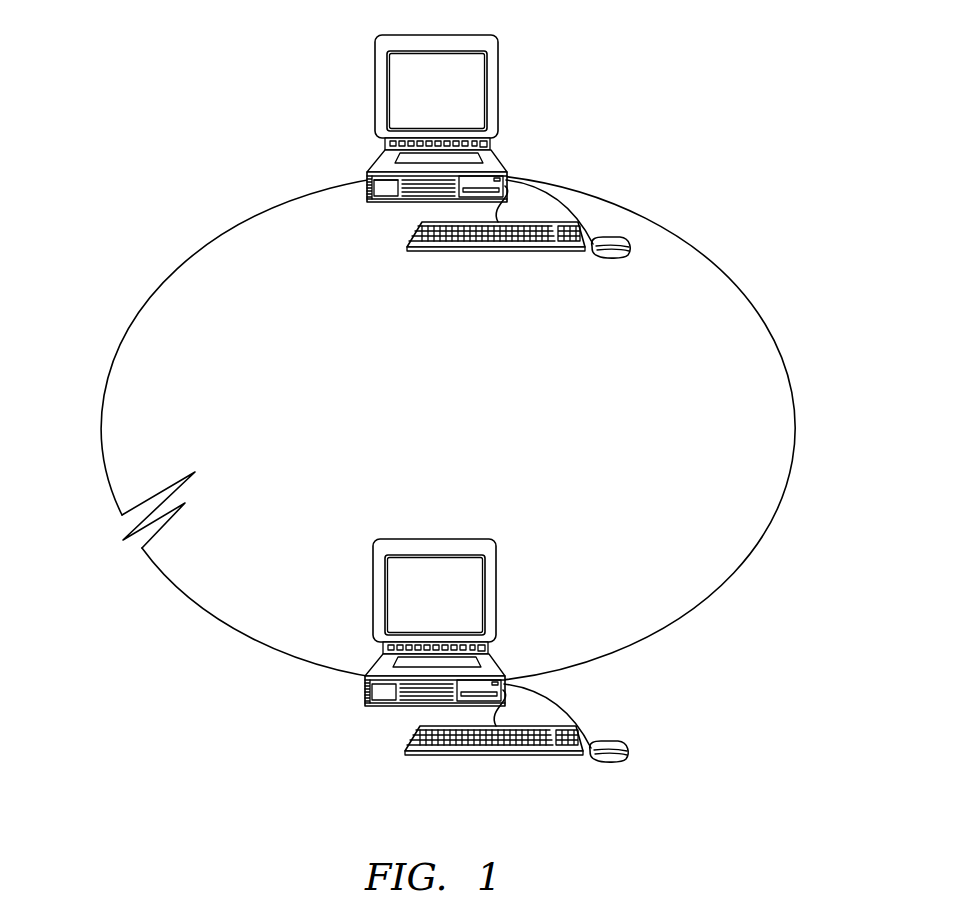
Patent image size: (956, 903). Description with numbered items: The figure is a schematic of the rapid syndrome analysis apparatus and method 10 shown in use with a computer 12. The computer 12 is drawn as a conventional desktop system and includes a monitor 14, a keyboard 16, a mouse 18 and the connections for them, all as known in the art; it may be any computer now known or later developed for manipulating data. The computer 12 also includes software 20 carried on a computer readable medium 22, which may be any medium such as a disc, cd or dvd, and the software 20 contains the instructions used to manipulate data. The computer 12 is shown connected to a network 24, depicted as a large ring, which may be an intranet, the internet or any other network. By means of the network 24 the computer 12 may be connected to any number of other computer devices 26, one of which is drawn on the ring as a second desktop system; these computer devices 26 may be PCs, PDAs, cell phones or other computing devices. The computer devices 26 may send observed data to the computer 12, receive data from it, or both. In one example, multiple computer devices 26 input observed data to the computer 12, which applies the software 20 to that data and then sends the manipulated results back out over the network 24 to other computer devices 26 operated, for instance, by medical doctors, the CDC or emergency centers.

The rapid syndrome analysis apparatus and method 10 is at (119, 49).
The computer 12 is at (506, 160).
The monitor 14 is at (498, 62).
The keyboard 16 is at (520, 253).
The mouse 18 is at (627, 258).
The software 20 is at (386, 187).
The computer readable medium 22 is at (390, 178).
The network 24 is at (758, 306).
The computer devices 26 is at (372, 656).